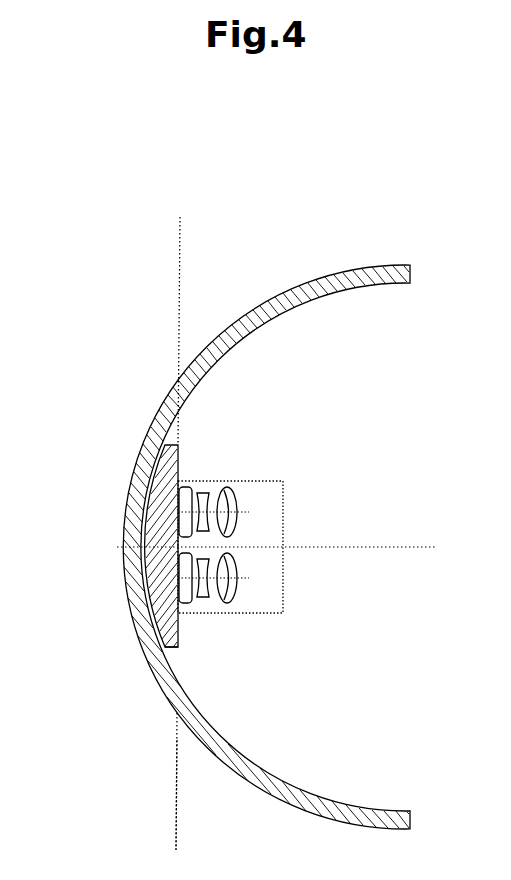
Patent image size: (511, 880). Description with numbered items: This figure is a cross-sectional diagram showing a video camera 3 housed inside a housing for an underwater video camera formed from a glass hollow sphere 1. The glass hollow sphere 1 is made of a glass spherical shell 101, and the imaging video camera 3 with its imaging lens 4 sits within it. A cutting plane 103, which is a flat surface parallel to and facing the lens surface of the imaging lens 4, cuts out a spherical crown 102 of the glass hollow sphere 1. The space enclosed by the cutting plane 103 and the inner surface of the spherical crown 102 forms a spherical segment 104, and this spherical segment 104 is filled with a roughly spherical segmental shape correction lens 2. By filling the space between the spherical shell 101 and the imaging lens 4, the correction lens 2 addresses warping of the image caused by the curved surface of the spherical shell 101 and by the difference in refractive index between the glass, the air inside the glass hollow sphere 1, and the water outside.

The glass hollow sphere 1 is at (473, 267).
The roughly spherical segmental shape correction lens 2 is at (182, 450).
The imaging video camera 3 is at (263, 497).
The imaging lens 4 is at (238, 469).
The spherical shell 101 is at (175, 685).
The spherical crown 102 is at (170, 620).
The cutting plane 103 is at (176, 800).
The spherical segment 104 is at (180, 652).